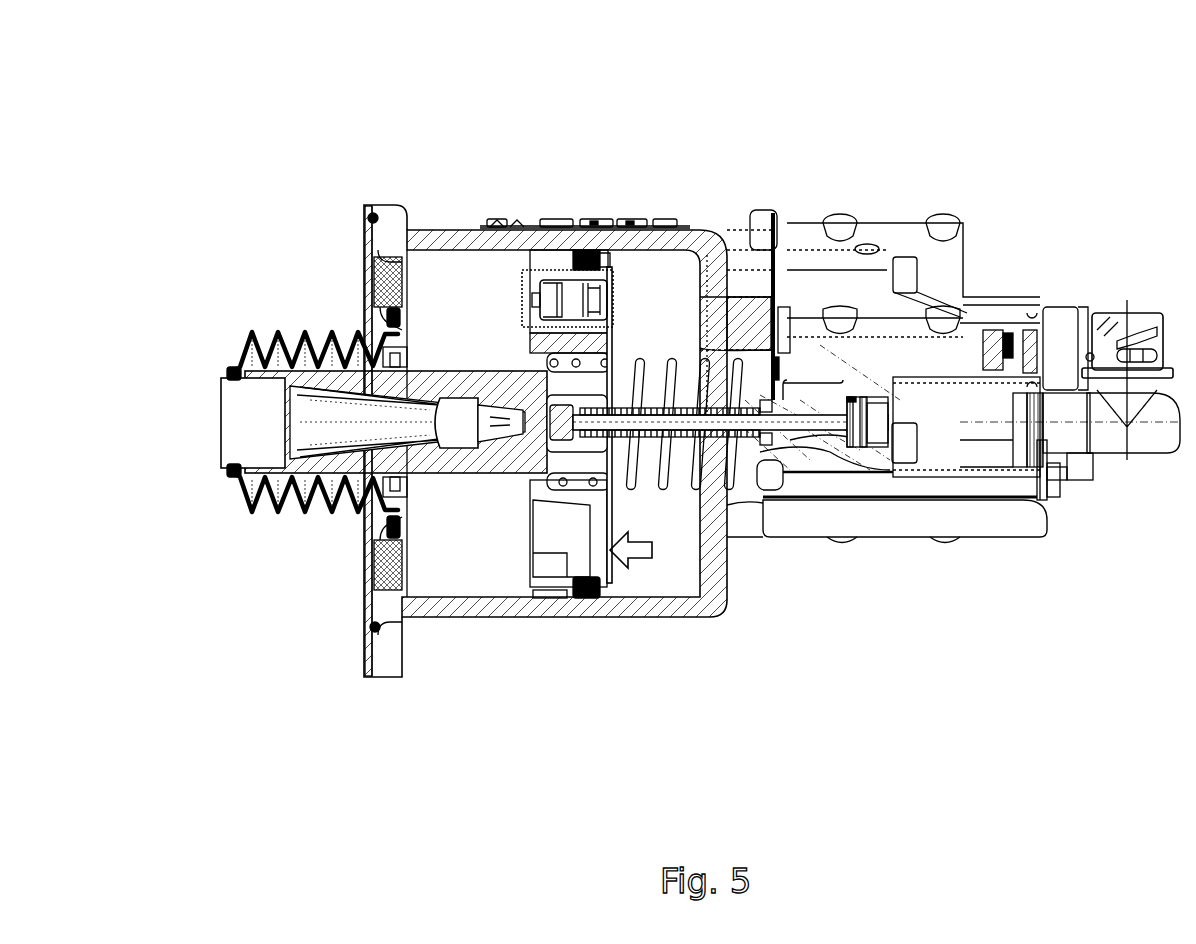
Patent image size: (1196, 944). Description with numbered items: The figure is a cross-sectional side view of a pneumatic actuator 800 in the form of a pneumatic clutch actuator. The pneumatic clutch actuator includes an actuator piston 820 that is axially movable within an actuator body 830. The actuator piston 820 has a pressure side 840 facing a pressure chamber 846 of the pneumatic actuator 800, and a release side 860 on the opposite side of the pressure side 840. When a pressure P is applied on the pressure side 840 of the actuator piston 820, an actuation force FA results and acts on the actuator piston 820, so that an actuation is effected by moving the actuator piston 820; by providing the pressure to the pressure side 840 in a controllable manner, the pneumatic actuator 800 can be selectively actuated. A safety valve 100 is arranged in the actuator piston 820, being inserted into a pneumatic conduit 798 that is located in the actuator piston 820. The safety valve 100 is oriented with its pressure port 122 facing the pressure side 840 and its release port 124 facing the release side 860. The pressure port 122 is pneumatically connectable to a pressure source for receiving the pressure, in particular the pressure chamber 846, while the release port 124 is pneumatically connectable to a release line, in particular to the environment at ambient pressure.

The pneumatic actuator 800 is at (1079, 44).
The actuator piston 820 is at (540, 235).
The actuator body 830 is at (643, 246).
The pressure chamber 846 is at (681, 263).
The pneumatic conduit 798 is at (548, 263).
The safety valve 100 is at (570, 290).
The release side 860 is at (510, 288).
The release port 124 is at (540, 297).
The pressure port 122 is at (600, 293).
The pressure side 840 is at (626, 298).
The actuation force FA is at (635, 552).